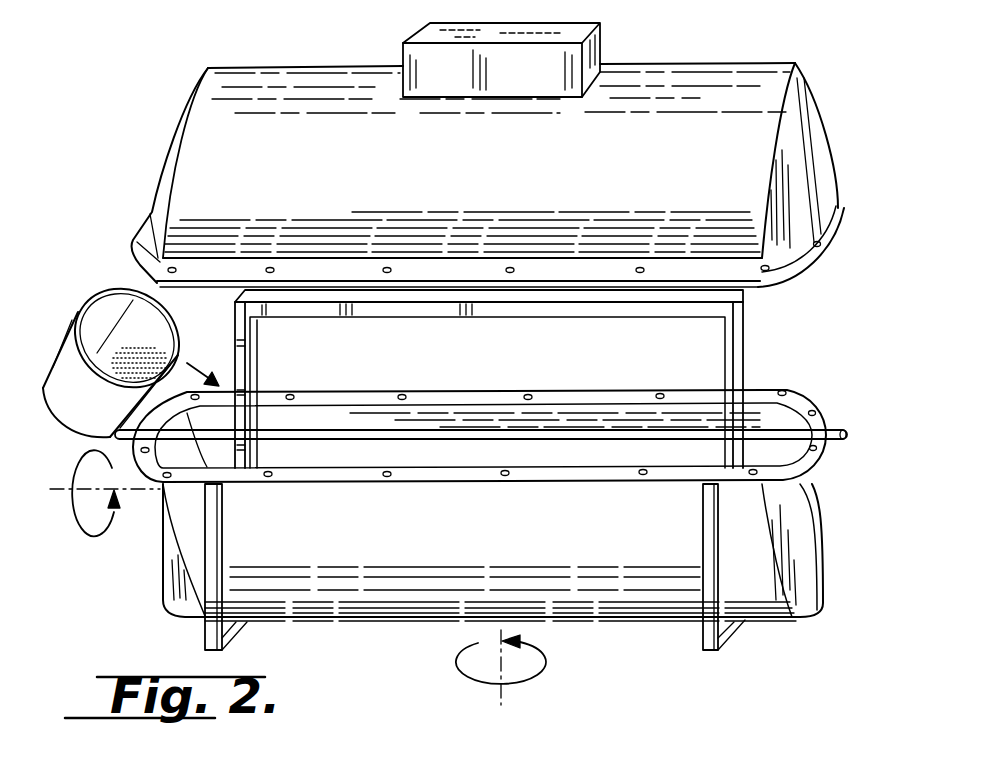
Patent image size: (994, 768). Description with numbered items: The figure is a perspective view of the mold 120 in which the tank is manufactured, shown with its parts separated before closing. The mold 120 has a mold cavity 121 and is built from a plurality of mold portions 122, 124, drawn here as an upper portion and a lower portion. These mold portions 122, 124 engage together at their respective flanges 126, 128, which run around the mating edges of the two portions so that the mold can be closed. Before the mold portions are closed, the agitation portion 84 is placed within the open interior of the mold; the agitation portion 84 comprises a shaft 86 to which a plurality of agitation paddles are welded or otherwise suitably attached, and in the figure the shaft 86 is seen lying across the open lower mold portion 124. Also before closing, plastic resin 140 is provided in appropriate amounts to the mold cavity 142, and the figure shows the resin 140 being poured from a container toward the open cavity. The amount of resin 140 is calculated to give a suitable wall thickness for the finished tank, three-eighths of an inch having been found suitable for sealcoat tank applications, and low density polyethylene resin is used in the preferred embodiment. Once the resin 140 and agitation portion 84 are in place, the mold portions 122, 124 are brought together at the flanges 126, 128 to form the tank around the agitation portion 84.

The mold 120 is at (795, 63).
The mold portion 122 is at (823, 128).
The flange 126 is at (806, 252).
The agitation portion 84 is at (743, 312).
The shaft 86 is at (498, 434).
The mold cavity 121 is at (763, 412).
The flange 128 is at (808, 398).
The mold portion 124 is at (823, 499).
The plastic resin 140 is at (137, 348).
The mold cavity 142 is at (172, 421).